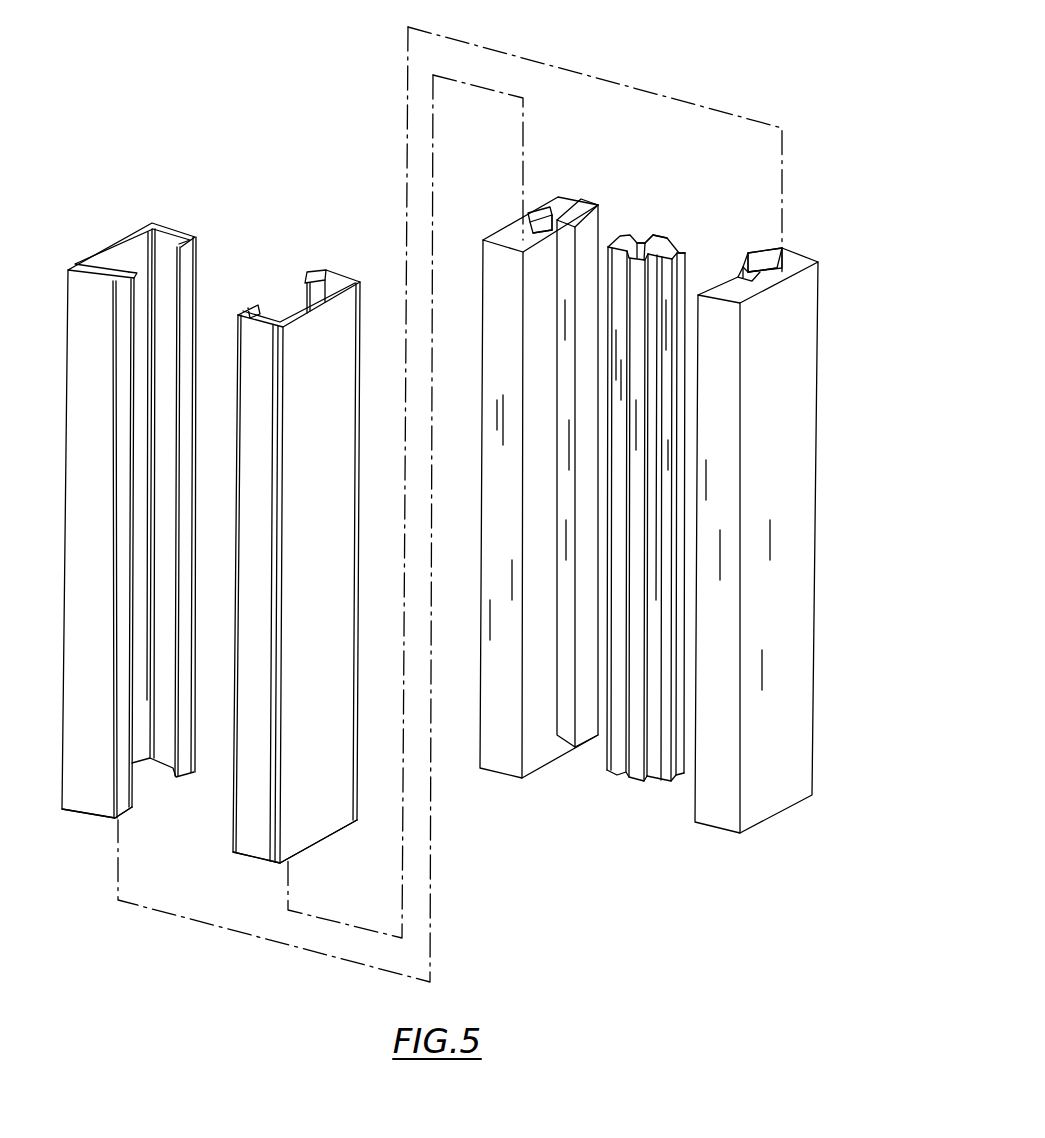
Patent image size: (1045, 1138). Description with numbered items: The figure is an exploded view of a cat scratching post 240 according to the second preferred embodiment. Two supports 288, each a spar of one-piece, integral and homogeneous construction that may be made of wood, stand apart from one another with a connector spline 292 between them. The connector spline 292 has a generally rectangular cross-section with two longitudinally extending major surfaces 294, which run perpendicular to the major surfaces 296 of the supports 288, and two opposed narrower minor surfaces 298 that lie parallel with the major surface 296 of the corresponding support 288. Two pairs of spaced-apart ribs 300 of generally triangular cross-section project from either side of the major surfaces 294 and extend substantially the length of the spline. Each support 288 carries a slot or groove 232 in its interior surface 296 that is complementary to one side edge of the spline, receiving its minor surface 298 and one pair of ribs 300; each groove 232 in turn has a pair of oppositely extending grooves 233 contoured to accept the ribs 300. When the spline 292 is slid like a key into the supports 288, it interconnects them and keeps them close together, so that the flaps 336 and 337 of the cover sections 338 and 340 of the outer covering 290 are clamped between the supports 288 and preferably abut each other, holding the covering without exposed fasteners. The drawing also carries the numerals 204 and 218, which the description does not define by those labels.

The door panel 204 is at (676, 76).
The recess 218 is at (528, 215).
The slot or groove 232 is at (560, 223).
The oppositely extending grooves 233 is at (557, 220).
The cat scratching post 240 is at (583, 875).
The support 288 is at (507, 775).
The outer covering 290 is at (85, 807).
The connector spline 292 is at (666, 239).
The major surfaces 294 is at (664, 238).
The major surfaces 296 is at (545, 770).
The minor surfaces 298 is at (613, 235).
The ribs 300 is at (643, 241).
The flap 336 is at (131, 290).
The flap 337 is at (322, 277).
The cover section 338 is at (166, 510).
The cover section 340 is at (297, 567).